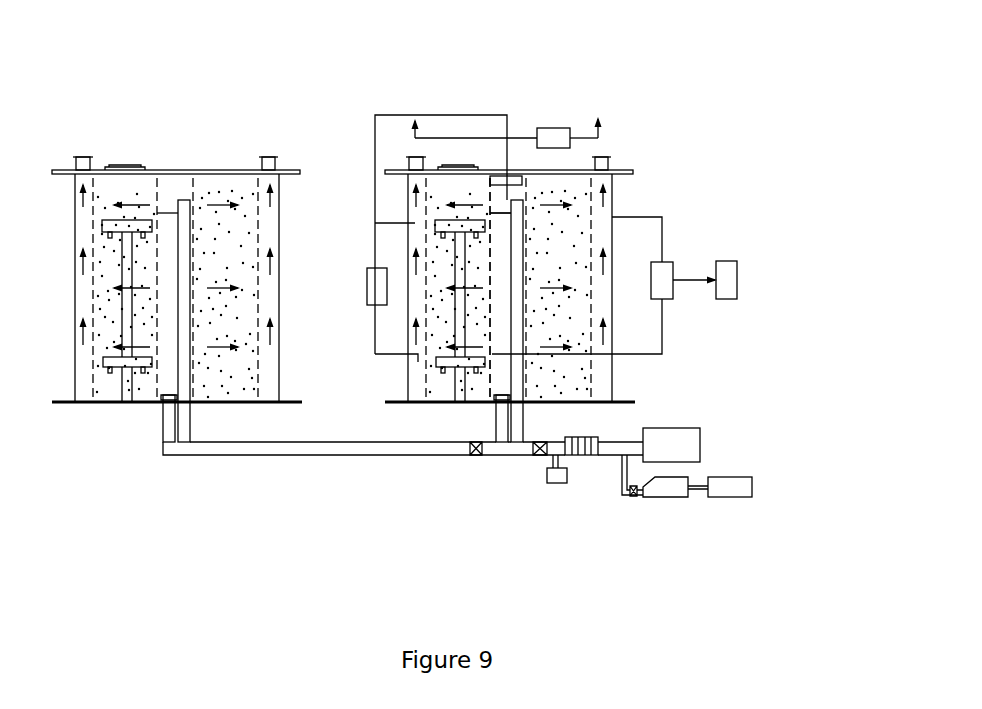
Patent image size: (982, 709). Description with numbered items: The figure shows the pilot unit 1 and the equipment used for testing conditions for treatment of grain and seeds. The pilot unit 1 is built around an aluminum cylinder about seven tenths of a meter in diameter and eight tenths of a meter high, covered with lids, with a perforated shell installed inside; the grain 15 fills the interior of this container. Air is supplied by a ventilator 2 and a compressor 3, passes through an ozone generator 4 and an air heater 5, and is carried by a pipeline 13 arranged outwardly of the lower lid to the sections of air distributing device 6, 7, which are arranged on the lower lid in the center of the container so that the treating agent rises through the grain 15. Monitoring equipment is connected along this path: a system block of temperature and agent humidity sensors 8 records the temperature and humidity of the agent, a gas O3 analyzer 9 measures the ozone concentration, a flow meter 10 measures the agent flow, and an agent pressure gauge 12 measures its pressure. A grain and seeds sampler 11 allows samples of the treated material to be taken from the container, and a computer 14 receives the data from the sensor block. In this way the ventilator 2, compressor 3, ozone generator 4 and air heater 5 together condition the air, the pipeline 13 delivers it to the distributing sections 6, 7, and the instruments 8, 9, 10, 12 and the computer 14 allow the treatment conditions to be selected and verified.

The pilot unit 1 is at (417, 390).
The ventilator 2 is at (672, 442).
The compressor 3 is at (728, 485).
The ozone generator 4 is at (663, 487).
The air heater 5 is at (577, 445).
The section of air distributing device 6 is at (498, 248).
The section of air distributing device 7 is at (501, 185).
The system block of temperature and agent humidity sensors 8 is at (665, 280).
The gas O3 analyzer 9 is at (559, 477).
The flow meter 10 is at (553, 138).
The grain and seeds sampler 11 is at (453, 167).
The agent pressure gauge 12 is at (377, 287).
The pipeline 13 is at (508, 448).
The computer 14 is at (727, 280).
The grain 15 is at (570, 190).